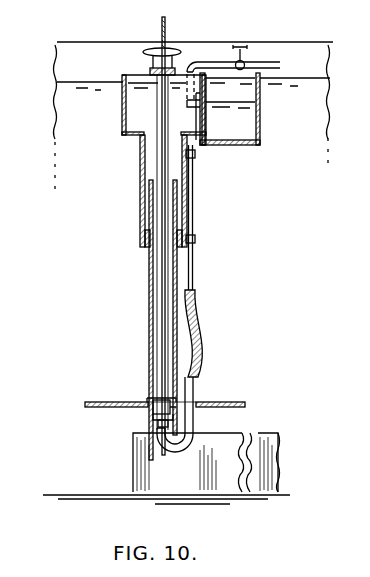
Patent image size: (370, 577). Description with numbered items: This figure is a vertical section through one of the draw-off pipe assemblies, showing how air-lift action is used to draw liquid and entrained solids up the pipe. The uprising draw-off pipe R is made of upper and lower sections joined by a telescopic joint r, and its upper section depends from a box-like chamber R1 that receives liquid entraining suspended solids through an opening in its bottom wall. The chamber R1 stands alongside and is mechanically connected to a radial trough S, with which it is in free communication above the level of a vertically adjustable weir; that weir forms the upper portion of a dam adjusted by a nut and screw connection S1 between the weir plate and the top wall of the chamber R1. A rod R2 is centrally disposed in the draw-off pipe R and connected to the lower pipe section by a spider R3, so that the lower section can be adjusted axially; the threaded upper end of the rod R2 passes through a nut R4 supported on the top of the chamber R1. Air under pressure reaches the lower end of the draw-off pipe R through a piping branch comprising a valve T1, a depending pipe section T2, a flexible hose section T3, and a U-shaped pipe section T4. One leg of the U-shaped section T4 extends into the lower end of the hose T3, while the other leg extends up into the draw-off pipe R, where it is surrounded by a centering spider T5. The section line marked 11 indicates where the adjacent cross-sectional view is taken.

The nut R4 is at (158, 63).
The box-like chamber R1 is at (123, 108).
The nut and screw connection S1 is at (192, 70).
The valve T1 is at (242, 60).
The radial trough S is at (196, 114).
The depending pipe section T2 is at (192, 192).
The telescopic joint r is at (188, 237).
The rod R2 is at (170, 273).
The draw-off pipe R is at (150, 287).
The flexible hose section T3 is at (197, 320).
The spider R3 is at (152, 395).
The centering spider T5 is at (152, 423).
The U-shaped pipe section T4 is at (173, 448).
The section line 11- 11 is at (107, 342).